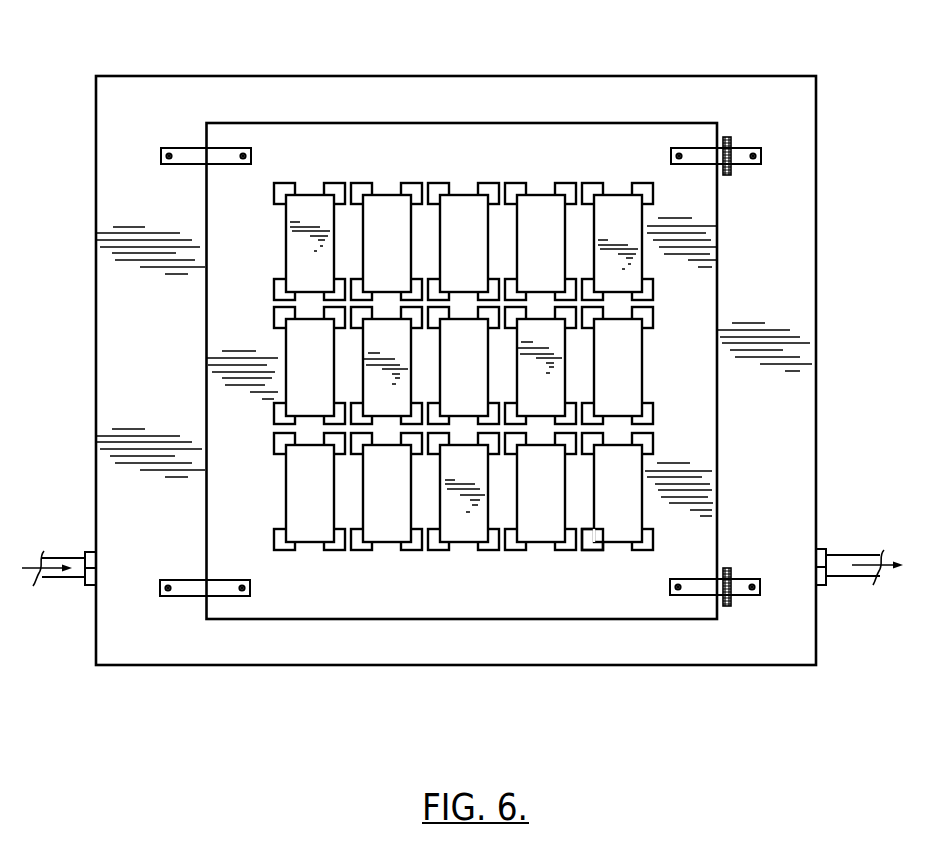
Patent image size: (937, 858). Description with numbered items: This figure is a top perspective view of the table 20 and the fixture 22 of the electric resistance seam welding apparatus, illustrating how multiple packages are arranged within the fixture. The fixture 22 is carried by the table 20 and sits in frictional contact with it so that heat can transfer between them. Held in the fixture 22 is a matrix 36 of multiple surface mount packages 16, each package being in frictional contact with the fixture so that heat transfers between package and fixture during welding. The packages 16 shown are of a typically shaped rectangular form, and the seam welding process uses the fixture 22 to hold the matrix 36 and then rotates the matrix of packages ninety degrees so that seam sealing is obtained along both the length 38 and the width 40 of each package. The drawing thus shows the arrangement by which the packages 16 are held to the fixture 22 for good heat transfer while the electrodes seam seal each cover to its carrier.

The surface mount package 16 is at (622, 352).
The table 20 is at (788, 260).
The fixture 22 is at (673, 123).
The matrix 36 is at (700, 410).
The length 38 is at (642, 472).
The width 40 is at (617, 545).